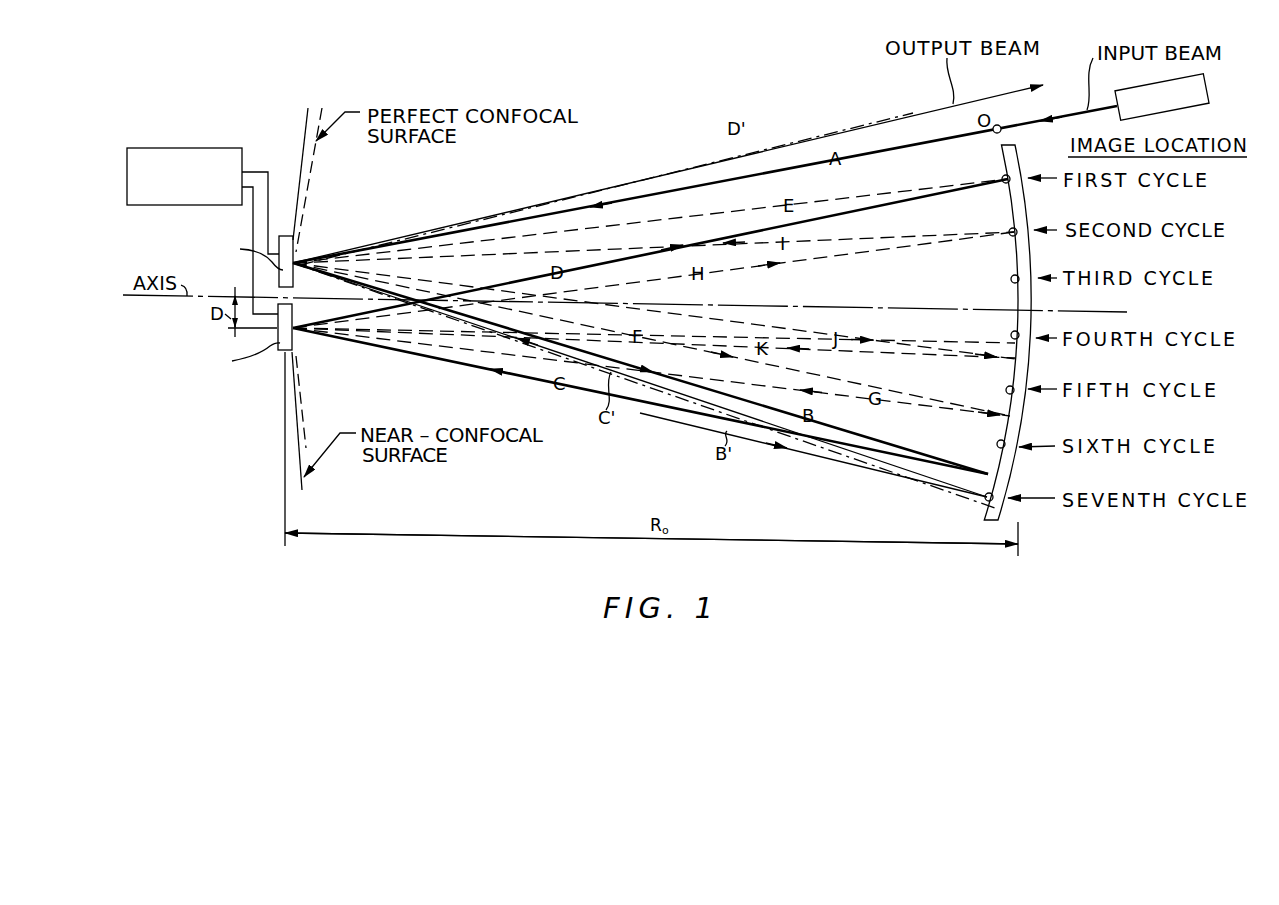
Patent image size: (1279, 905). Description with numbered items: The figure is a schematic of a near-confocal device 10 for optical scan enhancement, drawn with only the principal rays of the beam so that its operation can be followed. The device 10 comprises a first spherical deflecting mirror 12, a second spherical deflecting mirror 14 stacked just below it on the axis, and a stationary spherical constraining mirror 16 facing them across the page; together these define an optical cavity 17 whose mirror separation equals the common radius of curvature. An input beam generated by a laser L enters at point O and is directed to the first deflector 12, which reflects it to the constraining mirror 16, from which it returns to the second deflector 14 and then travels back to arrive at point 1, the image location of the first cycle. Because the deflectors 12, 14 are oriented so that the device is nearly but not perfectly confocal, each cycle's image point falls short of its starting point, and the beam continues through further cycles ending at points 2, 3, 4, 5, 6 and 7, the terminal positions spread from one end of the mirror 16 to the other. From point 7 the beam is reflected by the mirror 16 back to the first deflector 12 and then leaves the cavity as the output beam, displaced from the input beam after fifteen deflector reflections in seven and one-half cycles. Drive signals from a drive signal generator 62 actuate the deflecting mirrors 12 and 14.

The drive signal generator 62 is at (127, 170).
The first spherical deflecting mirror 12 is at (293, 257).
The second spherical deflecting mirror 14 is at (290, 341).
The stationary spherical constraining mirror 16 is at (1023, 298).
The optical cavity 17 is at (870, 292).
The near-confocal device 10 is at (664, 460).
The laser L is at (1211, 95).
The image location of first cycle 1 is at (1003, 169).
The image location of second cycle 2 is at (1009, 221).
The image location of third cycle 3 is at (1011, 269).
The image location of fourth cycle 4 is at (1009, 328).
The image location of fifth cycle 5 is at (1003, 382).
The image location of sixth cycle 6 is at (993, 438).
The image location of seventh cycle 7 is at (985, 487).